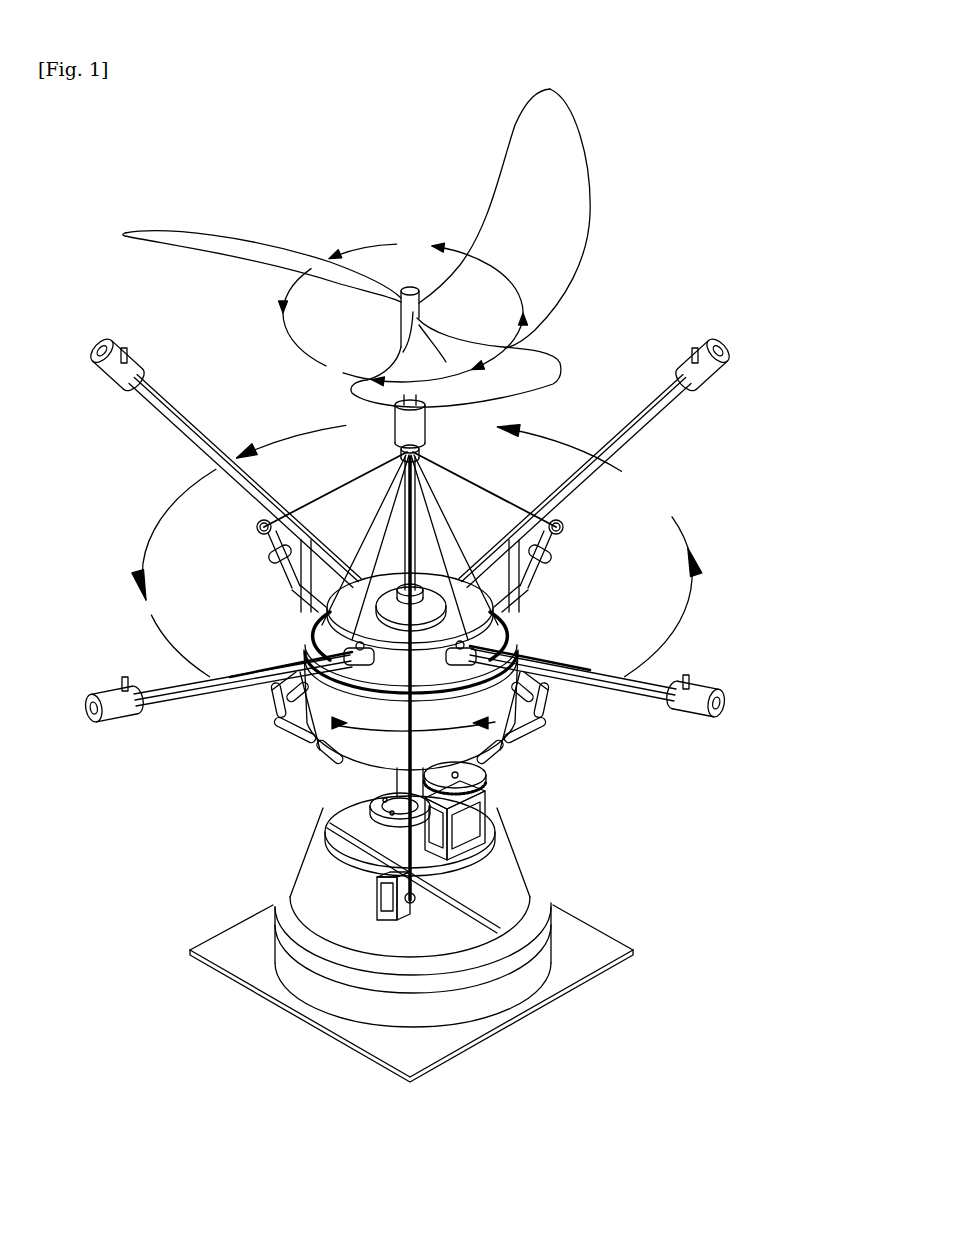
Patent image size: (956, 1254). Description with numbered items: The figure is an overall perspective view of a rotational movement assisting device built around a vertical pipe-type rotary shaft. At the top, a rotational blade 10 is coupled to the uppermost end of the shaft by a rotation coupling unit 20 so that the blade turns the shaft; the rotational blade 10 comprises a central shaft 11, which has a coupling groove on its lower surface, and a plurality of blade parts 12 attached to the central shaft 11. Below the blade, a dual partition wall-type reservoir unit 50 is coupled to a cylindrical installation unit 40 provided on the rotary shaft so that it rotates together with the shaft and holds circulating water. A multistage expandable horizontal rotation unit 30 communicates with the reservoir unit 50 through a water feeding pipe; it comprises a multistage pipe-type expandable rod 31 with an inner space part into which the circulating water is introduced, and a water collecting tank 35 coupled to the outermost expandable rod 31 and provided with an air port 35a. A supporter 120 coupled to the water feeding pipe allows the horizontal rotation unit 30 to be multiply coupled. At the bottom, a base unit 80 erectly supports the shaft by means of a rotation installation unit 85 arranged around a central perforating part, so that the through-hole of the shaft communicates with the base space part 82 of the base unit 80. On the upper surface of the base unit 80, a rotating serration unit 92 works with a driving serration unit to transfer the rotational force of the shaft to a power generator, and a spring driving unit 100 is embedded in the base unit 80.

The rotational blade 10 is at (614, 202).
The central shaft 11 is at (410, 290).
The blade parts 12 is at (198, 240).
The rotation coupling unit 20 is at (426, 413).
The horizontal rotation unit 30 is at (610, 468).
The expandable rod 31 is at (153, 403).
The water collecting tank 35 is at (695, 690).
The air port 35a is at (112, 680).
The installation unit 40 is at (316, 604).
The reservoir unit 50 is at (315, 750).
The base unit 80 is at (648, 808).
The base space part 82 is at (336, 957).
The rotation installation unit 85 is at (370, 814).
The rotating serration unit 92 is at (487, 776).
The spring driving unit 100 is at (378, 890).
The supporter 120 is at (270, 537).